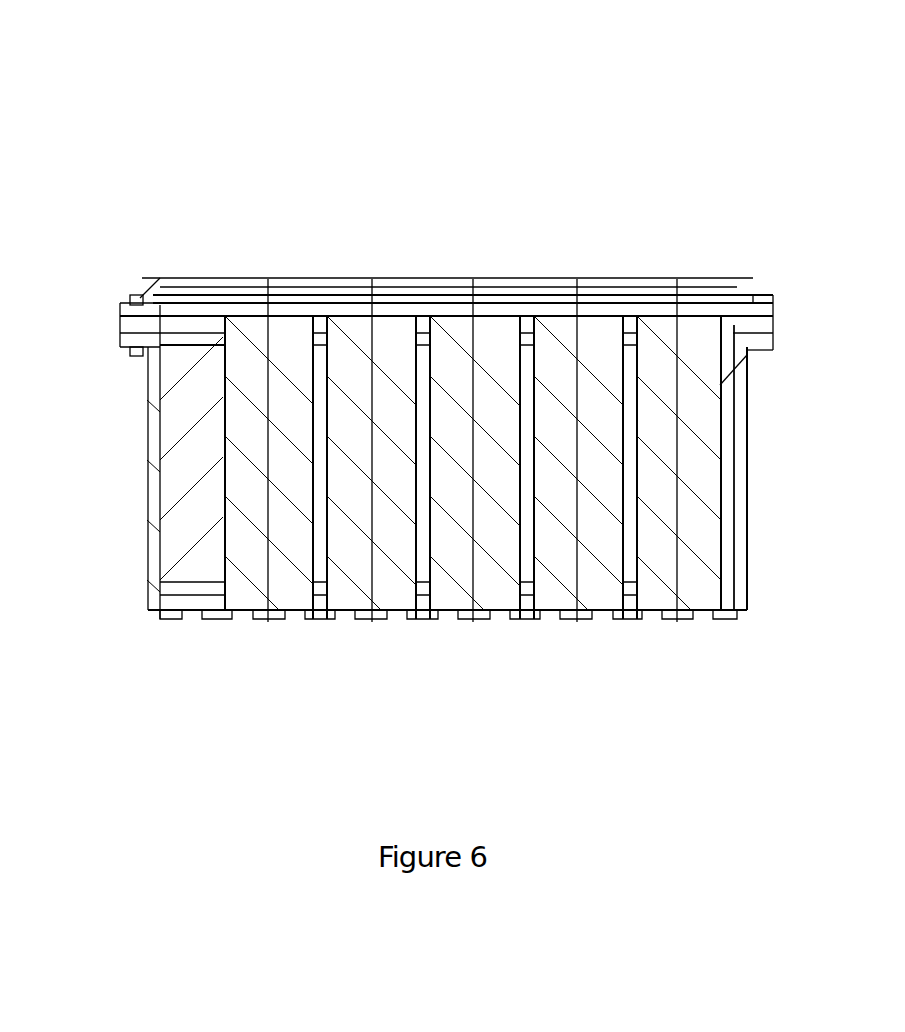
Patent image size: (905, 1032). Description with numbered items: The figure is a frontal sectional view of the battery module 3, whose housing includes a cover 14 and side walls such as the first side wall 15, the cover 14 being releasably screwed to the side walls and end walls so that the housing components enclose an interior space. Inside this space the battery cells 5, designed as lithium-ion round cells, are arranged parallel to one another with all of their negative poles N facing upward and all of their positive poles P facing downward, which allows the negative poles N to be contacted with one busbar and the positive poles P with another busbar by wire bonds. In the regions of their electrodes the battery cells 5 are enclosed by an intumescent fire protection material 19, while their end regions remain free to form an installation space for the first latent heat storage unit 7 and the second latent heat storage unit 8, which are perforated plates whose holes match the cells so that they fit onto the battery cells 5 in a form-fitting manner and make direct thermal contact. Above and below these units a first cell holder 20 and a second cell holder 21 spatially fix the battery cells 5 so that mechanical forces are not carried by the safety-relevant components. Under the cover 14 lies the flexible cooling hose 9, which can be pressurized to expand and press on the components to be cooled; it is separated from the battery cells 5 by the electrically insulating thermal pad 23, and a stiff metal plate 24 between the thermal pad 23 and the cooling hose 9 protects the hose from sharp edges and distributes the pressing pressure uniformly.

The battery module 3 is at (112, 56).
The cover 14 is at (158, 278).
The flexible cooling hose 9 is at (753, 297).
The metal plate 24 is at (753, 297).
The electrically insulating thermal pad 23 is at (733, 310).
The first cell holder 20 is at (733, 336).
The first latent heat storage unit 7 is at (760, 346).
The second latent heat storage unit 8 is at (747, 407).
The intumescent fire protection material 19 is at (627, 432).
The first side wall 15 is at (747, 498).
The battery cells 5 is at (723, 534).
The second cell holder 21 is at (160, 612).
The negative poles N is at (268, 316).
The positive poles P is at (292, 613).